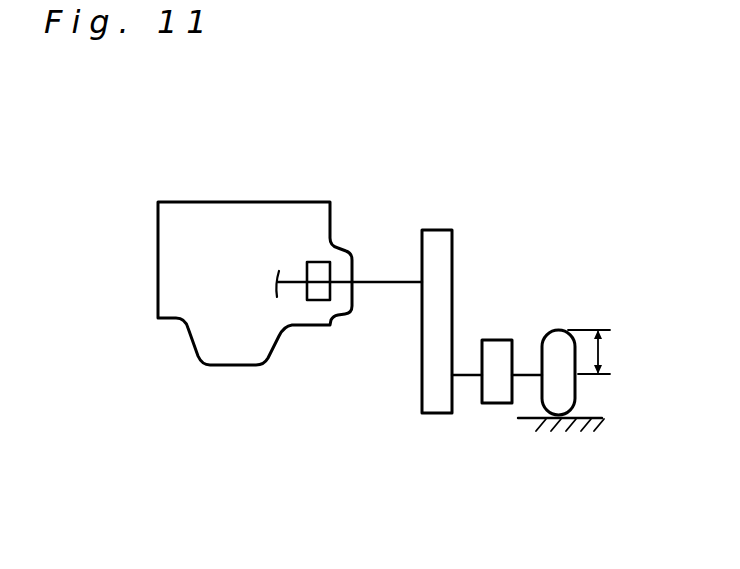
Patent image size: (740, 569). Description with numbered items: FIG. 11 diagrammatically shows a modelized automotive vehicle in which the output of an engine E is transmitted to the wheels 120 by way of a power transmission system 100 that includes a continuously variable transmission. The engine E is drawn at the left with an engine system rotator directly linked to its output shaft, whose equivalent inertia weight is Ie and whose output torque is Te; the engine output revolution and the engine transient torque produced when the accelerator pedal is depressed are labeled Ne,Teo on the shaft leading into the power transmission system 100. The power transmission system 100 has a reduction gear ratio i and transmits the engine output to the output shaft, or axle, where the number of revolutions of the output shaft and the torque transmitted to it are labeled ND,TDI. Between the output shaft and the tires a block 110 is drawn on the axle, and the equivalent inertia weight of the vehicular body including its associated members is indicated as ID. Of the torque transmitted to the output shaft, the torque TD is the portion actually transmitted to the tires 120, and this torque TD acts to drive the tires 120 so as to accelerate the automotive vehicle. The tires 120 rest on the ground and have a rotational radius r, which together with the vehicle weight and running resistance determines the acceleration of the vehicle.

The engine E is at (253, 200).
The output torque Te is at (293, 280).
The equivalent inertia weight of engine system rotator Ie is at (317, 300).
The output revolution and engine transient torque Ne,Teo is at (380, 280).
The power transmission system 100 is at (443, 303).
The reduction gear ratio i is at (425, 357).
The output shaft revolutions and transmitted torque ND,TDI is at (468, 378).
The drive system inertia 110 is at (503, 404).
The equivalent inertia weight of vehicular body ID is at (493, 342).
The torque transmitted to tires TD is at (522, 378).
The wheels 120 is at (556, 342).
The rotational radius r is at (602, 355).